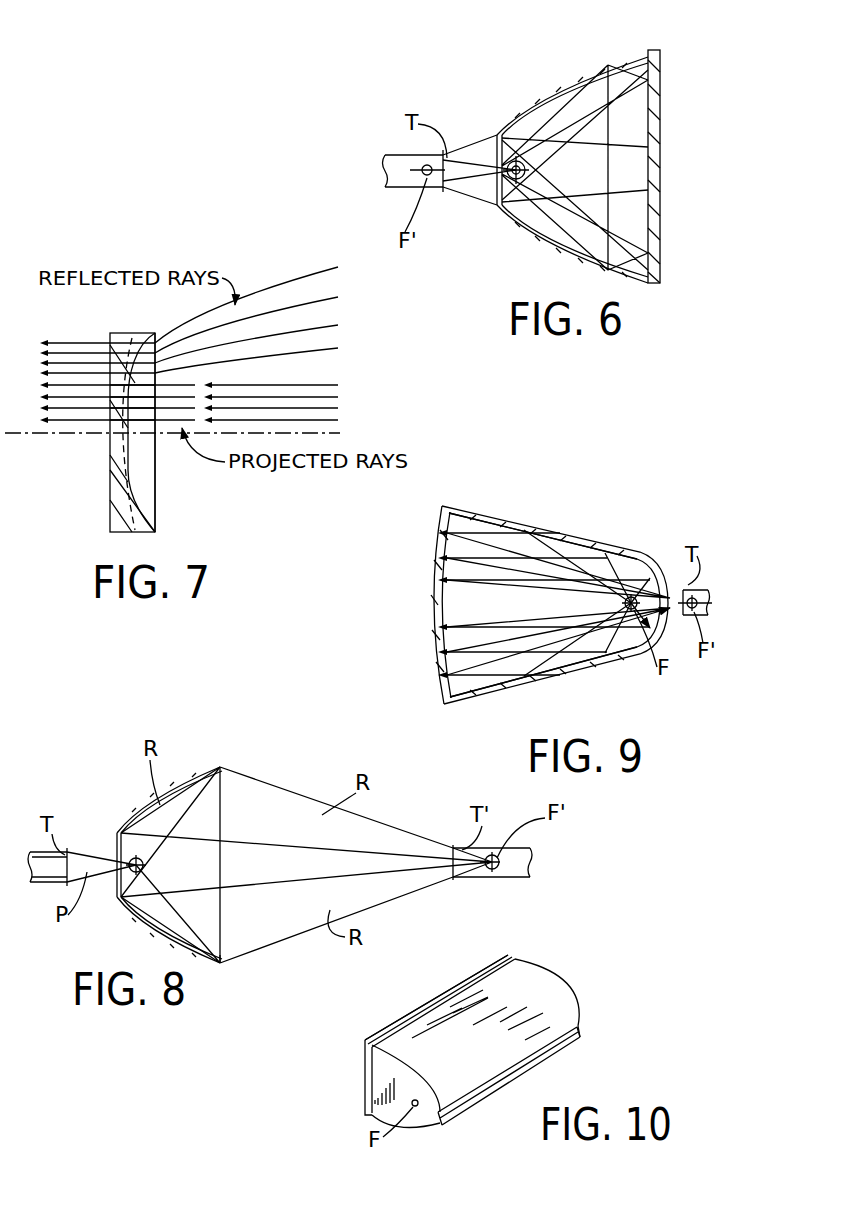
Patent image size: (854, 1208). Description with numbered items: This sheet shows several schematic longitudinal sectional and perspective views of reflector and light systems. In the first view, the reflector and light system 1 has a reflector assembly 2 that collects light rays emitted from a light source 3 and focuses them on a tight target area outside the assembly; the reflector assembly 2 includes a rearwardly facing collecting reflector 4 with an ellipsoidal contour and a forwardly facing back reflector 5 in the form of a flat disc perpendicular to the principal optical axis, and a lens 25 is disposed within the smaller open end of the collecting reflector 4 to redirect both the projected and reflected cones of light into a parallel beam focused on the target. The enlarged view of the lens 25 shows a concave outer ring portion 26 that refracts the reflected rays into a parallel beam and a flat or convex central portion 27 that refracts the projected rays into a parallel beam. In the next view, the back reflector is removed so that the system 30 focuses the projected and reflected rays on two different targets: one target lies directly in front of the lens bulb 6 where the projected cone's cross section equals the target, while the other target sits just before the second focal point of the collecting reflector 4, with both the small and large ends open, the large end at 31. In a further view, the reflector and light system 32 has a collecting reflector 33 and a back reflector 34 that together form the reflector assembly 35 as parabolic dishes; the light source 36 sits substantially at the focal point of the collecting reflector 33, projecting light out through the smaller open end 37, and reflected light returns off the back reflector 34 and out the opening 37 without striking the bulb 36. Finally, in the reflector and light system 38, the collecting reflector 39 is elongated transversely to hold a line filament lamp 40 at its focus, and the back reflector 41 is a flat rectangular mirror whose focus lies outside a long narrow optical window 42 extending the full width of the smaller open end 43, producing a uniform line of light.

In FIG. 6, the reflector and light system 1 is at (588, 55).
In FIG. 6, the reflector assembly 2 is at (560, 70).
In FIG. 6, the light source 3 is at (532, 170).
In FIG. 6, the collecting reflector 4 is at (622, 57).
In FIG. 8, the collecting reflector 4 is at (188, 780).
In FIG. 6, the back reflector 5 is at (660, 122).
In FIG. 6, the lens 25 is at (497, 142).
In FIG. 7, the lens 25 is at (112, 508).
In FIG. 7, the concave outer ring portion 26 is at (155, 508).
In FIG. 7, the central portion 27 is at (132, 462).
In FIG. 8, the system 30 is at (224, 752).
In FIG. 8, the large open end 31 is at (222, 963).
In FIG. 8, the lens bulb 6 is at (144, 866).
In FIG. 9, the reflector and light system 32 is at (624, 548).
In FIG. 9, the collecting reflector 33 is at (560, 531).
In FIG. 9, the back reflector 34 is at (432, 563).
In FIG. 9, the reflector assembly 35 is at (580, 675).
In FIG. 9, the light source 36 is at (624, 603).
In FIG. 9, the smaller open end 37 is at (683, 590).
In FIG. 10, the reflector and light system 38 is at (507, 1047).
In FIG. 10, the collecting reflector 39 is at (527, 980).
In FIG. 10, the line filament lamp 40 is at (418, 1108).
In FIG. 10, the back reflector 41 is at (434, 998).
In FIG. 10, the optical window 42 is at (513, 1080).
In FIG. 10, the smaller open end 43 is at (583, 1034).